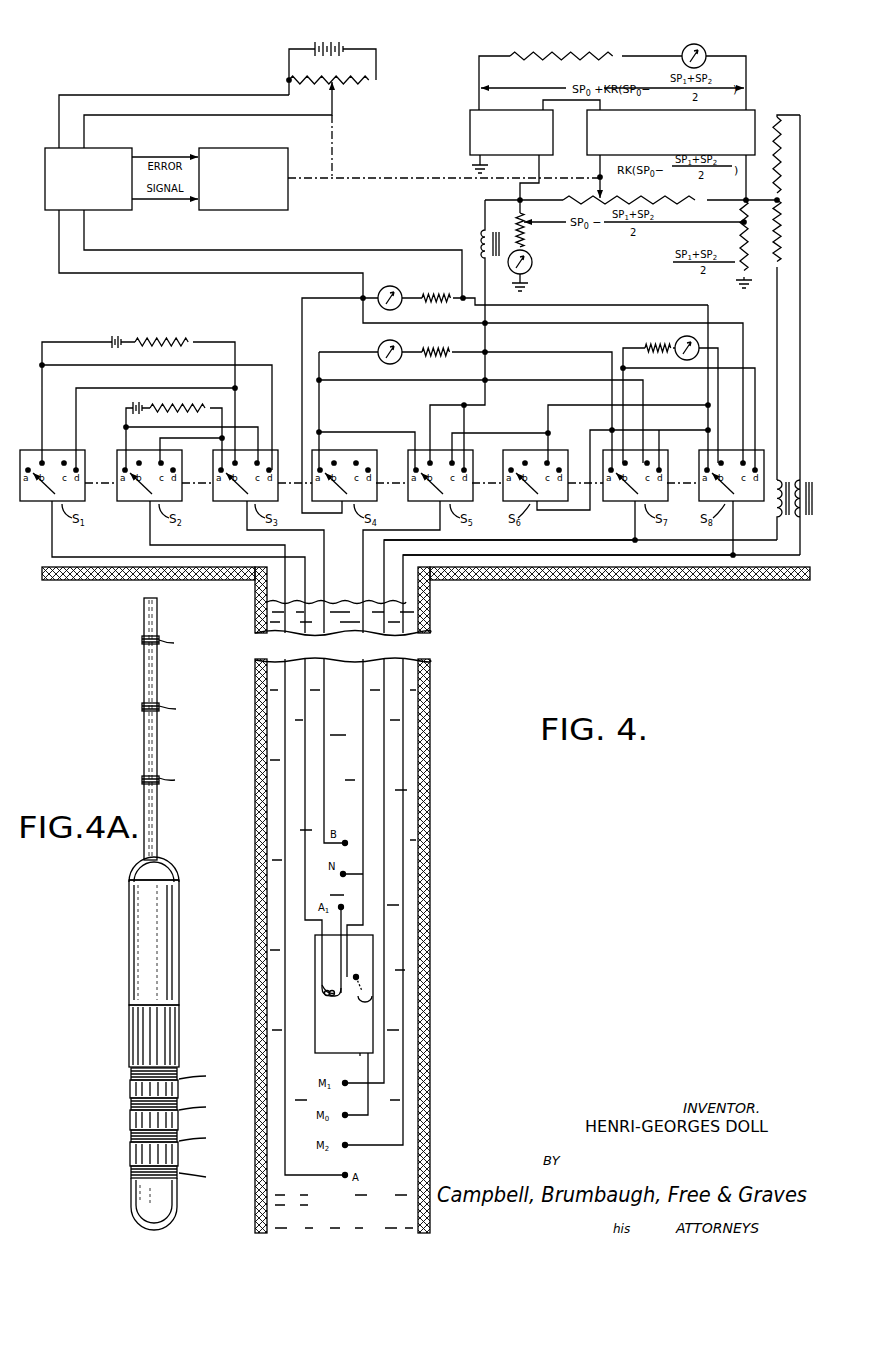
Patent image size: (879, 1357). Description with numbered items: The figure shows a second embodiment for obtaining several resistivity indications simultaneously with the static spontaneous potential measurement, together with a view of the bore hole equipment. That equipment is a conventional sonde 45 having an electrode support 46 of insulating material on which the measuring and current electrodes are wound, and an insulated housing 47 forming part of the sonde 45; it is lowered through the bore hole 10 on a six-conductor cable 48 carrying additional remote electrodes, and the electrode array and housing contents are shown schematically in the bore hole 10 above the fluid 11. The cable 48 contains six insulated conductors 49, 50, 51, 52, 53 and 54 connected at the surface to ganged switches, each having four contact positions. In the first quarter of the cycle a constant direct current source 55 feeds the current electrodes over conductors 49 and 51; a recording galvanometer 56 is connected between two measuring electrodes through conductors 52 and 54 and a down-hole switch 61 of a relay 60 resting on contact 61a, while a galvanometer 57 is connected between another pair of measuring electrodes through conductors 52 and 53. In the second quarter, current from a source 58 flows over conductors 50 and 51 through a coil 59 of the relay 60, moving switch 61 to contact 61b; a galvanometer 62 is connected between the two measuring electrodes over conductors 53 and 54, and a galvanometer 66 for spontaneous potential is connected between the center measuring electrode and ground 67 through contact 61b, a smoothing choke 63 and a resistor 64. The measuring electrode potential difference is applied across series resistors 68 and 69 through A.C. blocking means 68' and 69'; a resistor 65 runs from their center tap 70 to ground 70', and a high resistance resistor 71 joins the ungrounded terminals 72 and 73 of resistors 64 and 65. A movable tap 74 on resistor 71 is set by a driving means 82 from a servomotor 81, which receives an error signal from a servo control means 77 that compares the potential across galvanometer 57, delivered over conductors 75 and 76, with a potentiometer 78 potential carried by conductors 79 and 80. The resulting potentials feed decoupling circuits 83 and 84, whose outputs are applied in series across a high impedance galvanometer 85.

In FIG. 4, the bore hole 10 is at (415, 590).
In FIG. 4, the drilling fluid 11 is at (320, 1211).
In FIG. 4A, the sonde 45 is at (186, 994).
In FIG. 4A, the electrode support 46 is at (128, 1038).
In FIG. 4, the insulated housing 47 is at (362, 1054).
In FIG. 4A, the insulated housing 47 is at (172, 942).
In FIG. 4A, the six-conductor cable 48 is at (142, 614).
In FIG. 4, the conductor 49 is at (285, 655).
In FIG. 4, the conductor 50 is at (298, 660).
In FIG. 4, the conductor 51 is at (324, 774).
In FIG. 4, the conductor 52 is at (365, 732).
In FIG. 4, the conductor 53 is at (403, 655).
In FIG. 4, the conductor 54 is at (405, 740).
In FIG. 4, the current source 55 is at (140, 406).
In FIG. 4, the recording galvanometer 56 is at (422, 286).
In FIG. 4, the galvanometer 57 is at (414, 360).
In FIG. 4, the current source 58 is at (124, 336).
In FIG. 4, the relay coil 59 is at (332, 1008).
In FIG. 4, the relay 60 is at (355, 1054).
In FIG. 4, the down-hole switch 61 is at (358, 976).
In FIG. 4, the contact 61a is at (330, 993).
In FIG. 4, the contact 61b is at (373, 1001).
In FIG. 4, the galvanometer 62 is at (675, 346).
In FIG. 4, the smoothing choke 63 is at (478, 237).
In FIG. 4, the resistor 64 is at (517, 231).
In FIG. 4, the resistor 65 is at (745, 219).
In FIG. 4, the galvanometer 66 is at (530, 256).
In FIG. 4, the ground 67 is at (530, 287).
In FIG. 4, the resistor 68 is at (784, 321).
In FIG. 4, the A.C. blocking means 68' is at (813, 483).
In FIG. 4, the resistor 69 is at (764, 340).
In FIG. 4, the A.C. blocking means 69' is at (768, 511).
In FIG. 4, the center tap 70 is at (775, 158).
In FIG. 4, the ground 70' is at (720, 290).
In FIG. 4, the resistor 71 is at (693, 203).
In FIG. 4, the ungrounded terminal 72 is at (516, 198).
In FIG. 4, the ungrounded terminal 73 is at (746, 199).
In FIG. 4, the movable tap 74 is at (594, 177).
In FIG. 4, the conductor 75 is at (203, 274).
In FIG. 4, the conductor 76 is at (256, 254).
In FIG. 4, the servo control means 77 is at (42, 184).
In FIG. 4, the potentiometer 78 is at (331, 68).
In FIG. 4, the conductor 79 is at (172, 95).
In FIG. 4, the conductor 80 is at (192, 116).
In FIG. 4, the servomotor 81 is at (288, 170).
In FIG. 4, the driving means 82 is at (408, 176).
In FIG. 4, the decoupling circuit 83 is at (682, 146).
In FIG. 4, the decoupling circuit 84 is at (522, 146).
In FIG. 4, the galvanometer 85 is at (634, 56).